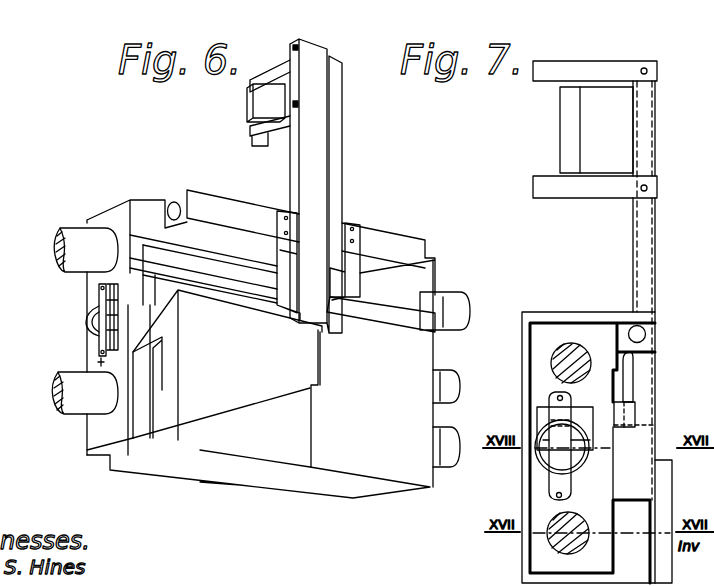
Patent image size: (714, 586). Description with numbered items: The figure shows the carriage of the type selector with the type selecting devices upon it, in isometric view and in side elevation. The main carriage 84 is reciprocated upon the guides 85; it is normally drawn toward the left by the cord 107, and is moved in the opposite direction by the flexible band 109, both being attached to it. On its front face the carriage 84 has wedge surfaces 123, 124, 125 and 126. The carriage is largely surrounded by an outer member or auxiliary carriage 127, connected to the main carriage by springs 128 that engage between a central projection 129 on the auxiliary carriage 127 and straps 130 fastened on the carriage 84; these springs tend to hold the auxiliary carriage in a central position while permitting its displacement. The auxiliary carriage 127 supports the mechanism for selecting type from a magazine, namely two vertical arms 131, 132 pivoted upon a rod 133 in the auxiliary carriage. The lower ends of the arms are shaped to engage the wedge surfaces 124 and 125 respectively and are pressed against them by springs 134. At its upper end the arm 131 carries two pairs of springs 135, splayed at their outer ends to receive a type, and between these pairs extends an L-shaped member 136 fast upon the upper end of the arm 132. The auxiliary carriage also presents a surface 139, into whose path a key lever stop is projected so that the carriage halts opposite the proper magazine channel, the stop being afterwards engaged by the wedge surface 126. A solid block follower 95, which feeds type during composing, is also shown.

In FIG. 6, the carriage 84 is at (104, 360).
In FIG. 7, the carriage 84 is at (580, 322).
In FIG. 6, the guides 85 is at (80, 404).
In FIG. 7, the guides 85 is at (551, 366).
In FIG. 6, the follower 95 is at (62, 216).
In FIG. 6, the cord 107 is at (98, 360).
In FIG. 6, the flexible band 109 is at (433, 380).
In FIG. 6, the wedge surface 123 is at (203, 276).
In FIG. 7, the wedge surface 123 is at (608, 377).
In FIG. 7, the wedge surface 124 is at (656, 424).
In FIG. 6, the wedge surface 125 is at (398, 312).
In FIG. 6, the wedge surface 126 is at (268, 405).
In FIG. 6, the auxiliary carriage 127 is at (236, 209).
In FIG. 7, the auxiliary carriage 127 is at (532, 319).
In FIG. 6, the springs 128 is at (92, 317).
In FIG. 7, the springs 128 is at (541, 417).
In FIG. 7, the central projection 129 is at (536, 431).
In FIG. 6, the straps 130 is at (98, 307).
In FIG. 7, the straps 130 is at (537, 470).
In FIG. 6, the vertical arm 131 is at (299, 184).
In FIG. 7, the vertical arm 131 is at (650, 254).
In FIG. 6, the vertical arm 132 is at (336, 182).
In FIG. 6, the rod 133 is at (173, 201).
In FIG. 7, the rod 133 is at (646, 334).
In FIG. 6, the springs 134 is at (364, 284).
In FIG. 7, the springs 134 is at (657, 382).
In FIG. 6, the springs 135 is at (276, 78).
In FIG. 7, the springs 135 is at (607, 55).
In FIG. 6, the L-shaped member 136 is at (247, 109).
In FIG. 7, the L-shaped member 136 is at (567, 129).
In FIG. 6, the surface 139 is at (313, 406).